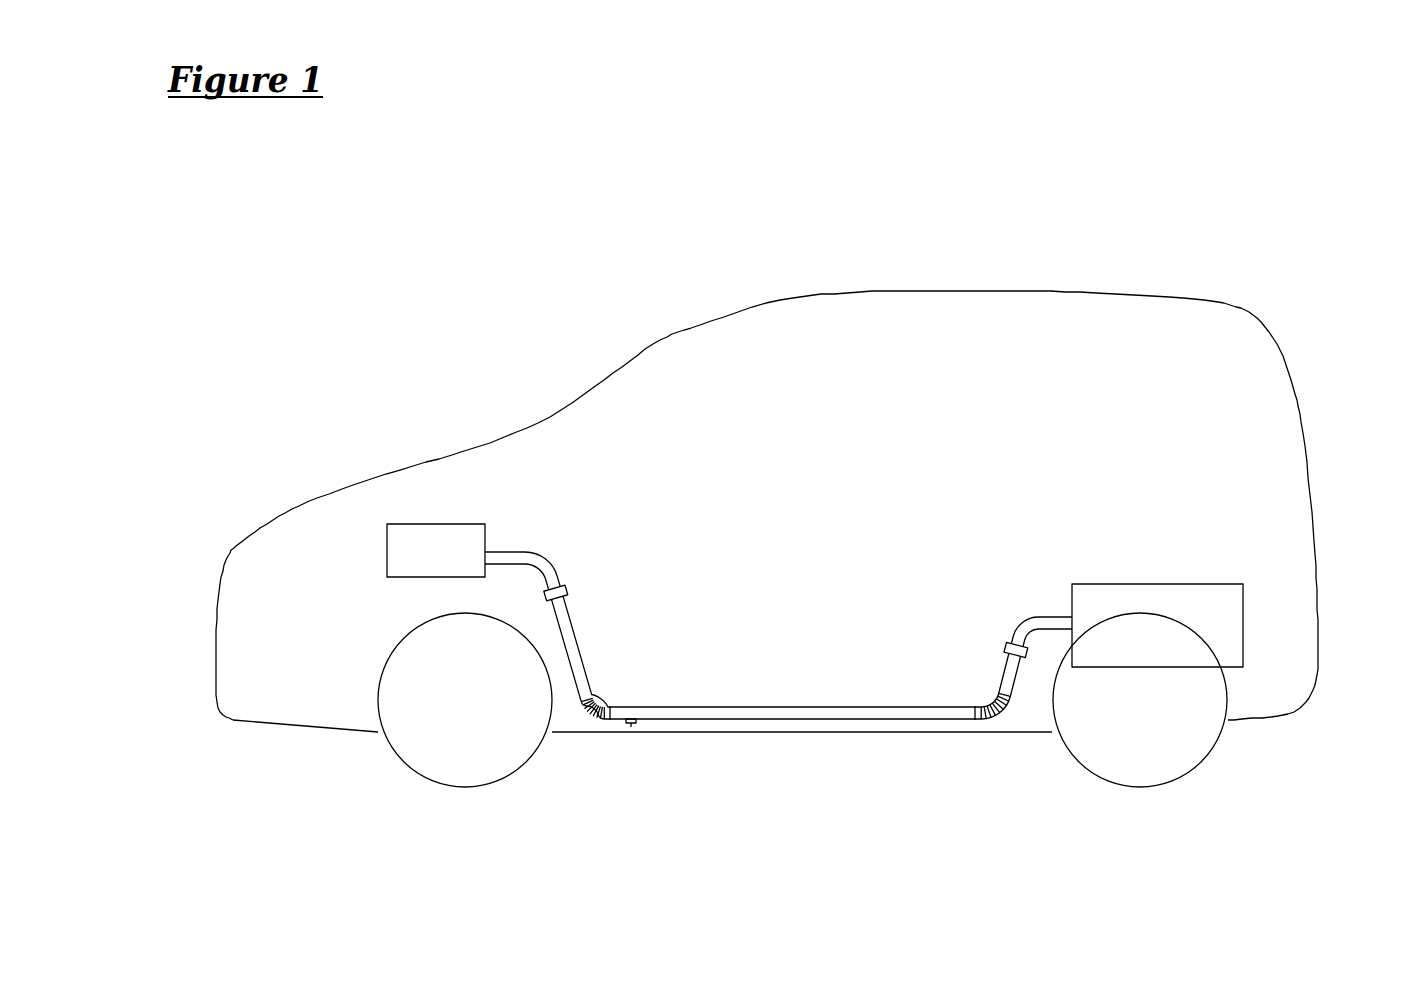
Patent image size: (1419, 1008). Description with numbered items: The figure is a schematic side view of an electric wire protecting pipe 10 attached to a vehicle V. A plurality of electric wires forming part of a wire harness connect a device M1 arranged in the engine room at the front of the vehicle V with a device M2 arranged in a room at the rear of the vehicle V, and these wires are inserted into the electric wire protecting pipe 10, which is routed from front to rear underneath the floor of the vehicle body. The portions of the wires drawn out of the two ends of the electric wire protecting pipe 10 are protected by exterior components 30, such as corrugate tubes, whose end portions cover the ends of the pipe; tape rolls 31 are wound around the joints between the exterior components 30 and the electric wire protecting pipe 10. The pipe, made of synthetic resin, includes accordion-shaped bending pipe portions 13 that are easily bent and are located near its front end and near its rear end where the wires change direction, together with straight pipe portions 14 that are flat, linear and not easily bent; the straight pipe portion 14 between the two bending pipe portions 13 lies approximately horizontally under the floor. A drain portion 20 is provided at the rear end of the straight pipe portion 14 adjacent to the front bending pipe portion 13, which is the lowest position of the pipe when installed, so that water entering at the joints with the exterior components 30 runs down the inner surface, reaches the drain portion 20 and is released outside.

The vehicle V is at (979, 320).
The electric wire protecting pipe 10 is at (848, 712).
The bending pipe portion 13 is at (587, 718).
The straight pipe portion 14 is at (568, 650).
The drain portion 20 is at (631, 727).
The exterior component 30 is at (510, 553).
The tape roll 31 is at (560, 590).
The device M1 is at (435, 540).
The device M2 is at (1223, 597).